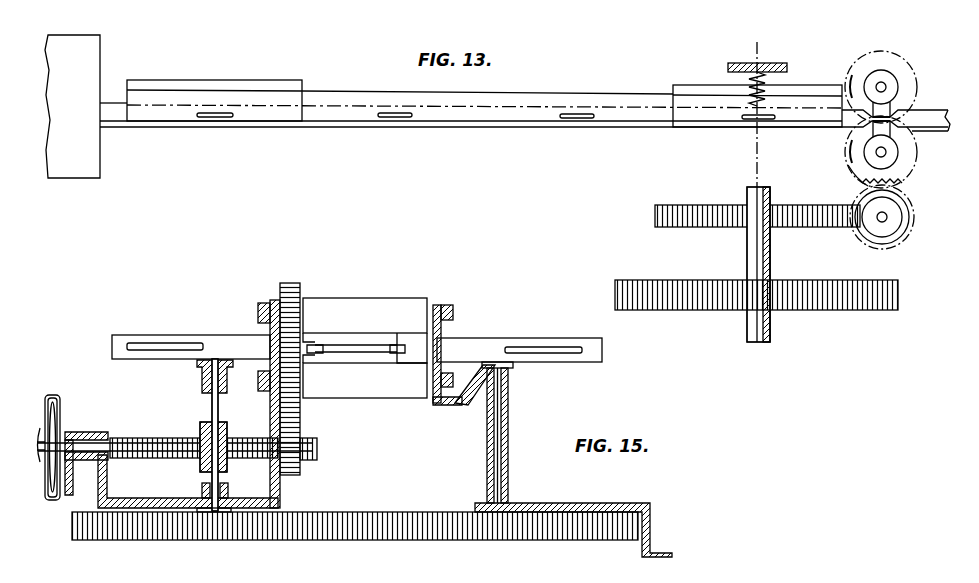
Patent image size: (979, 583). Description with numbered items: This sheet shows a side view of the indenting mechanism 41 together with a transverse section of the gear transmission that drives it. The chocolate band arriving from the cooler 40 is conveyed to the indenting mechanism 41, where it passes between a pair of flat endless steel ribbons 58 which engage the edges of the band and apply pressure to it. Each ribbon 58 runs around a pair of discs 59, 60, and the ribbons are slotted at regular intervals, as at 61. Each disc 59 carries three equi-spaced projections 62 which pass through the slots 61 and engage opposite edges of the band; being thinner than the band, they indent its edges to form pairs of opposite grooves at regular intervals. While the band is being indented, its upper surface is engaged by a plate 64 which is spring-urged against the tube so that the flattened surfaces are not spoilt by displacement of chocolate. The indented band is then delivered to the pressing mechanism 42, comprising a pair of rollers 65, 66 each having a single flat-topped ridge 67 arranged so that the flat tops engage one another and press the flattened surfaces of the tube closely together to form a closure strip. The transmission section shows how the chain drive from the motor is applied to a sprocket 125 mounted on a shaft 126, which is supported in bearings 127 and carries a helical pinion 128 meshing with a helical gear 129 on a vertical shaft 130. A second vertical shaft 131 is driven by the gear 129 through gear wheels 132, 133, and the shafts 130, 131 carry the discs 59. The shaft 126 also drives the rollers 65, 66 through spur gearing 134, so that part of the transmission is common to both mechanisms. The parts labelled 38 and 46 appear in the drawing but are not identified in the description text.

In FIG. 13, the bar end 38 is at (845, 112).
In FIG. 13, the cooler 40 is at (101, 48).
In FIG. 13, the indenting mechanism 41 is at (569, 91).
In FIG. 13, the pressing mechanism 42 is at (915, 90).
In FIG. 13, the bar extension 46 is at (925, 132).
In FIG. 13, the flat endless steel ribbons 58 is at (352, 128).
In FIG. 13, the disc 59 is at (673, 85).
In FIG. 15, the disc 59 is at (118, 335).
In FIG. 13, the disc 60 is at (200, 80).
In FIG. 13, the slots 61 is at (220, 118).
In FIG. 15, the projections 62 is at (163, 343).
In FIG. 13, the plate 64 is at (712, 105).
In FIG. 13, the roller 65 is at (876, 75).
In FIG. 15, the roller 65 is at (320, 300).
In FIG. 13, the roller 66 is at (897, 167).
In FIG. 15, the roller 66 is at (387, 398).
In FIG. 13, the flat-topped ridge 67 is at (892, 112).
In FIG. 15, the flat-topped ridge 67 is at (360, 355).
In FIG. 15, the sprocket 125 is at (60, 407).
In FIG. 15, the shaft 126 is at (56, 422).
In FIG. 15, the bearings 127 is at (88, 437).
In FIG. 13, the helical pinion 128 is at (865, 197).
In FIG. 15, the helical pinion 128 is at (205, 425).
In FIG. 13, the helical gear 129 is at (802, 228).
In FIG. 15, the helical gear 129 is at (131, 459).
In FIG. 13, the vertical shaft 130 is at (770, 335).
In FIG. 15, the vertical shaft 130 is at (214, 512).
In FIG. 15, the second vertical shaft 131 is at (503, 510).
In FIG. 13, the gear wheel 132 is at (838, 311).
In FIG. 15, the gear wheel 132 is at (100, 540).
In FIG. 15, the gear wheel 133 is at (412, 540).
In FIG. 13, the spur gearing 134 is at (850, 156).
In FIG. 15, the spur gearing 134 is at (302, 422).